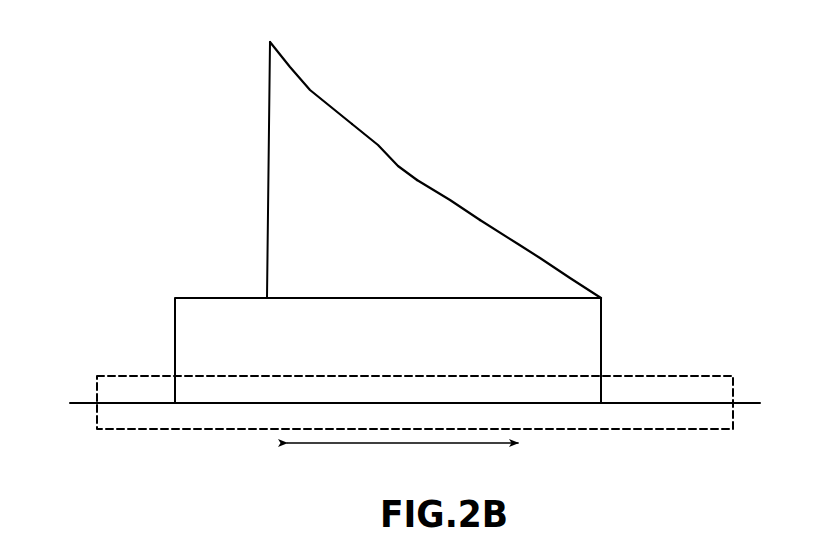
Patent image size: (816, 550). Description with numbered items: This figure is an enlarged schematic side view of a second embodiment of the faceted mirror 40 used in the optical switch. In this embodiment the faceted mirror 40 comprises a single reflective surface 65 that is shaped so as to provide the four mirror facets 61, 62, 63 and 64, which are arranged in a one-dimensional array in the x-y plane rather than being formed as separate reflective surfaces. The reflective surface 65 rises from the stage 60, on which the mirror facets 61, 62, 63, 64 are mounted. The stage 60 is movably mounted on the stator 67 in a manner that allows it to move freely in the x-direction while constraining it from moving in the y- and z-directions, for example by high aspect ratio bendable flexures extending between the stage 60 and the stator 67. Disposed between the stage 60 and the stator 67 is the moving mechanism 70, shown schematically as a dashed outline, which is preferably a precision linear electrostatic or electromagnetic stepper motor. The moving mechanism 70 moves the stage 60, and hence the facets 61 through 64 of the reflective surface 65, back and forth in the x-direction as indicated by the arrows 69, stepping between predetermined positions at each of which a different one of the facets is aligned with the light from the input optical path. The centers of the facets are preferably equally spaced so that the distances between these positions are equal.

The faceted mirror 40 is at (606, 299).
The stage 60 is at (175, 352).
The mirror facet 61 is at (542, 257).
The mirror facet 62 is at (451, 199).
The mirror facet 63 is at (379, 144).
The mirror facet 64 is at (311, 88).
The single reflective surface 65 is at (434, 170).
The stator 67 is at (82, 402).
The arrows 69 is at (402, 444).
The moving mechanism 70 is at (686, 375).